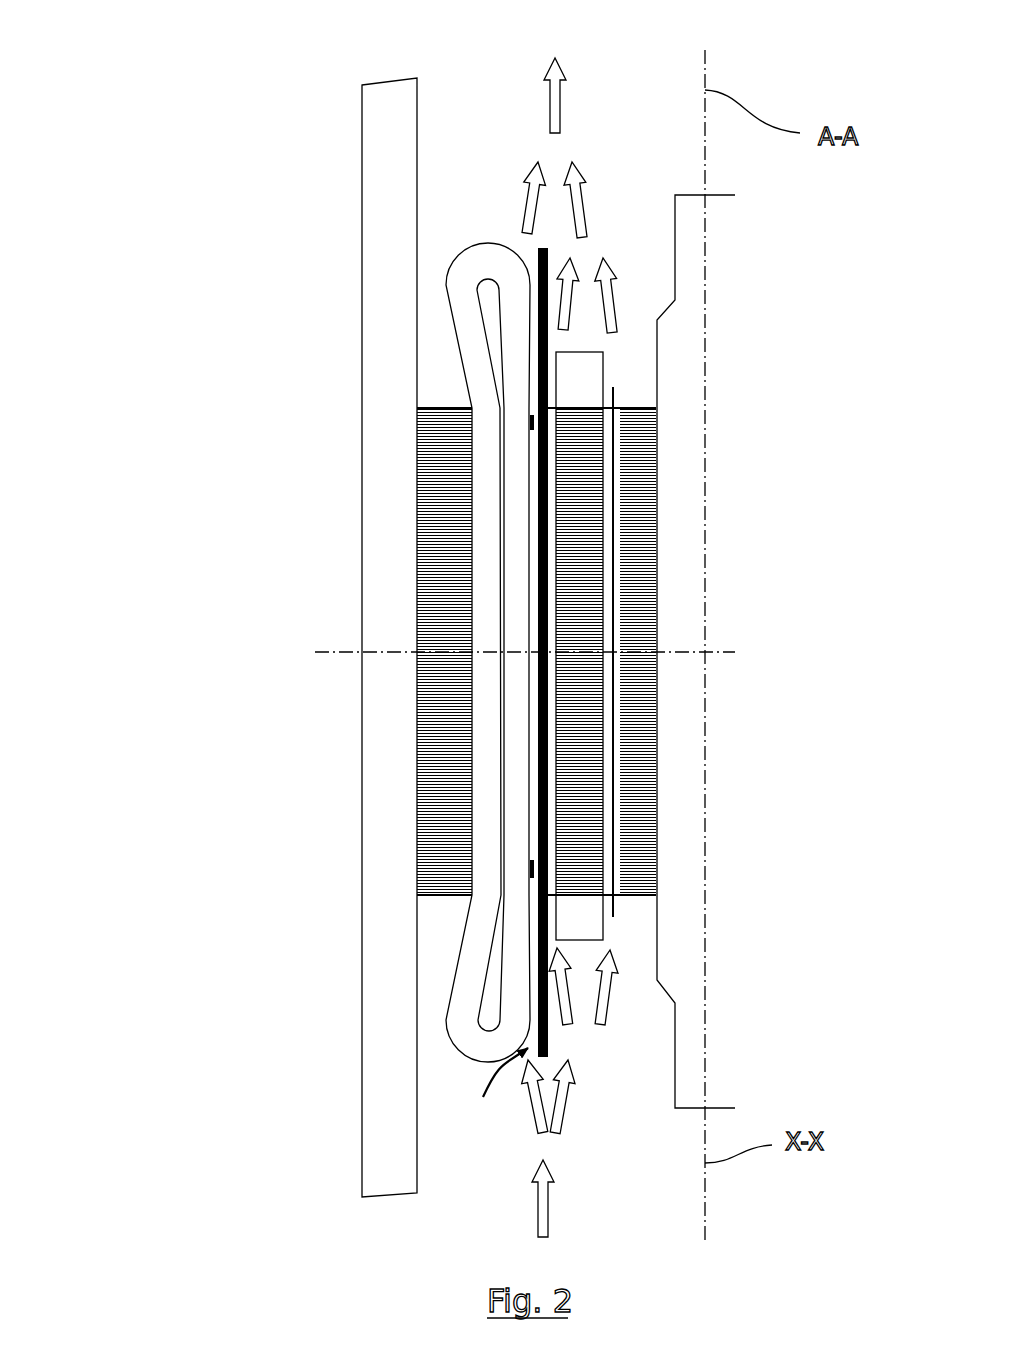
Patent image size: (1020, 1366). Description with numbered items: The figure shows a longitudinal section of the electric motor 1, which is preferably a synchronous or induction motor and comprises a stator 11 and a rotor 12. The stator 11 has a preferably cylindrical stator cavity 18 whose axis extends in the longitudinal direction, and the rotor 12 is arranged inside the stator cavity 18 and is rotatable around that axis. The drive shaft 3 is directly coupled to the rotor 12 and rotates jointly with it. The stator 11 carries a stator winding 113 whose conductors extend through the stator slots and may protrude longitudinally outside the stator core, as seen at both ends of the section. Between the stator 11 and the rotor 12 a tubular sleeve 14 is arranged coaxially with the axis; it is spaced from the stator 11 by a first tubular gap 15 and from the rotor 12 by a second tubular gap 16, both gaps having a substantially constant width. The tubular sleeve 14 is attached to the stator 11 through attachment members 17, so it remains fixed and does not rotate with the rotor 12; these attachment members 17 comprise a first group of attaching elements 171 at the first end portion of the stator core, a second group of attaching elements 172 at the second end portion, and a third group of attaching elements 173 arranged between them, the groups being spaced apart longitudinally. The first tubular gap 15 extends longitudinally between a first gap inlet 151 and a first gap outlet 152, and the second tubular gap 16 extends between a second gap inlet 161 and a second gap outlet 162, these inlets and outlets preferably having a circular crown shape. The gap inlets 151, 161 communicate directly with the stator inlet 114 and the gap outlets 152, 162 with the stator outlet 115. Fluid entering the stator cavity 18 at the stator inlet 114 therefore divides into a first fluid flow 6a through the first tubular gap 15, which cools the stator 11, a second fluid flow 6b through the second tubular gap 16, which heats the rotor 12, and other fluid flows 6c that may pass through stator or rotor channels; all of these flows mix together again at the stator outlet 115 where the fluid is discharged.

The electric motor 1 is at (240, 288).
The drive shaft 3 is at (690, 245).
The stator 11 is at (433, 715).
The rotor 12 is at (657, 555).
The tubular sleeve 14 is at (550, 912).
The first tubular gap 15 is at (529, 517).
The second tubular gap 16 is at (550, 727).
The attachment members 17 is at (535, 432).
The stator cavity 18 is at (637, 128).
The stator winding 113 is at (472, 262).
The stator inlet 114 is at (515, 1158).
The stator outlet 115 is at (549, 208).
The first gap inlet 151 is at (532, 1117).
The first gap outlet 152 is at (531, 246).
The second gap inlet 161 is at (553, 949).
The second gap outlet 162 is at (553, 338).
The first group of attaching elements 171 is at (529, 869).
The second group of attaching elements 172 is at (529, 423).
The third group of attaching elements 173 is at (547, 645).
The first fluid flow 6a is at (513, 1135).
The second fluid flow 6b is at (563, 1100).
The other fluid flows 6c is at (610, 988).